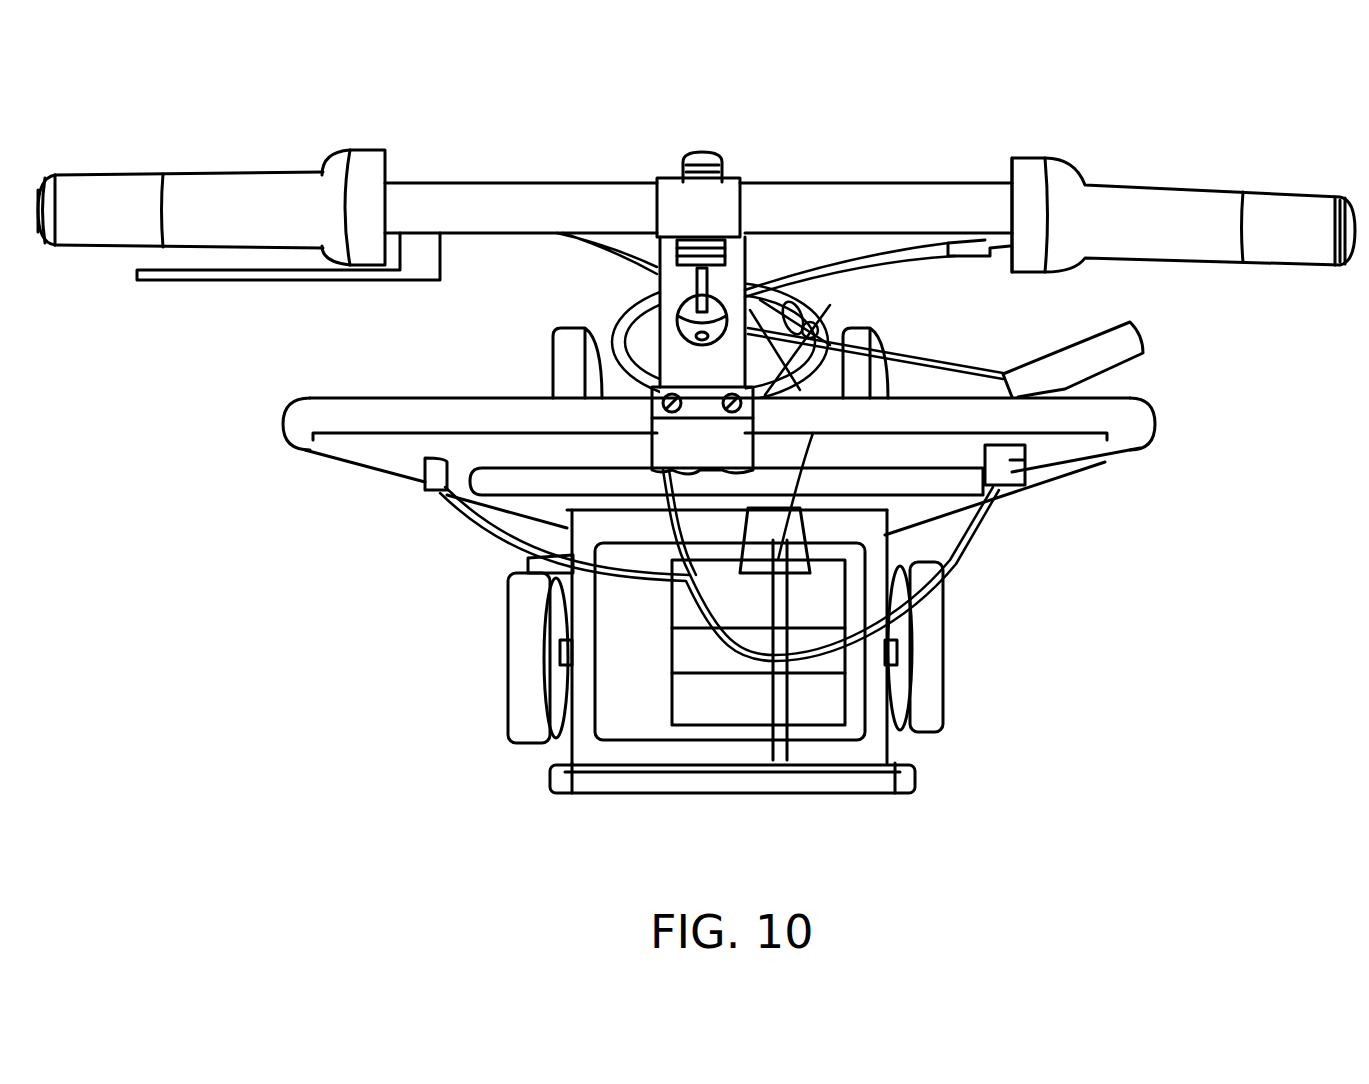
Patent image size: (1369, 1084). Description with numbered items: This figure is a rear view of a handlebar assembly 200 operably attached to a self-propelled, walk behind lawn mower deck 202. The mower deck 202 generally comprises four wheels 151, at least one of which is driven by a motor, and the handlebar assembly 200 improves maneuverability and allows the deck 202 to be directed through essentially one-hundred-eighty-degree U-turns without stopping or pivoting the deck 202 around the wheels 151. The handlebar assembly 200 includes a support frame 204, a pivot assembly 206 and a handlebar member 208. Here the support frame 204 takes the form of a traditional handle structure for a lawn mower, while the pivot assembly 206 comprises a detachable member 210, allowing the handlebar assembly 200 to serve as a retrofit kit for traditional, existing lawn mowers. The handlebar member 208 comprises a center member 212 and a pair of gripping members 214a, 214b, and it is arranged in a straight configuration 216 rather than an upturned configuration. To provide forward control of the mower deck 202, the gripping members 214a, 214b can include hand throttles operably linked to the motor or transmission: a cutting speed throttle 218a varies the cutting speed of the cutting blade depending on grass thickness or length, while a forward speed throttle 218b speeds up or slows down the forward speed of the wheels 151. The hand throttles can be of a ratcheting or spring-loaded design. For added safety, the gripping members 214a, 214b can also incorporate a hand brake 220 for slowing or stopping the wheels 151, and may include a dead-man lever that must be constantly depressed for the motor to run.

The handlebar assembly 200 is at (903, 190).
The self-propelled, walk behind lawn mower deck 202 is at (645, 718).
The support frame 204 is at (1058, 463).
The pivot assembly 206 is at (652, 318).
The handlebar member 208 is at (795, 190).
The detachable member 210 is at (655, 372).
The center member 212 is at (618, 192).
The gripping member 214a is at (1203, 202).
The gripping member 214b is at (300, 180).
The straight configuration 216 is at (978, 195).
The cutting speed throttle 218a is at (1310, 268).
The forward speed throttle 218b is at (98, 252).
The hand brake 220 is at (215, 283).
The wheels 151 is at (555, 347).